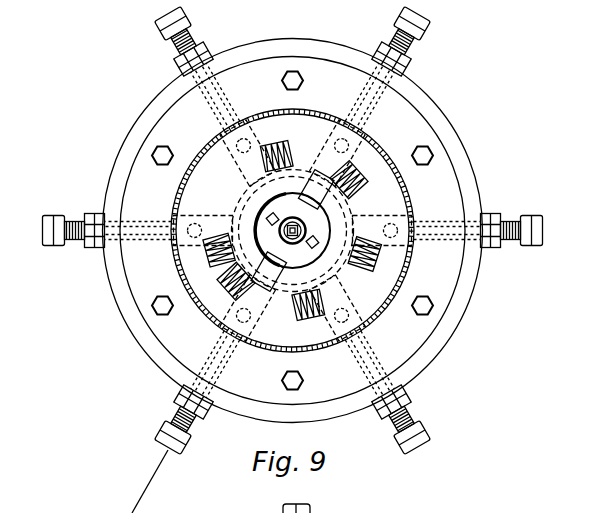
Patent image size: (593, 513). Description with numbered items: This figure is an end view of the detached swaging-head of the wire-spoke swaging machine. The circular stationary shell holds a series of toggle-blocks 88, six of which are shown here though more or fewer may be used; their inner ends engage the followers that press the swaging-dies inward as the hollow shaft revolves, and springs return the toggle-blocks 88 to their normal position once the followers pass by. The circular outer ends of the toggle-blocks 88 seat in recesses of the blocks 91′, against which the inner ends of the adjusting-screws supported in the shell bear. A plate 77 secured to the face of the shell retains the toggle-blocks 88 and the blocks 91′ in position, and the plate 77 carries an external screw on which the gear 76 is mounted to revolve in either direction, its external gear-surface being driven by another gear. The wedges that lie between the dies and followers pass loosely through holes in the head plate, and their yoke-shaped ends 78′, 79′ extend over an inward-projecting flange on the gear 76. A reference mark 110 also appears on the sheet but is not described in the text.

The gear 76 is at (397, 268).
The plate 77 is at (447, 173).
The yoke-shaped end 78′ is at (304, 177).
The yoke-shaped end 79′ is at (260, 262).
The toggle-blocks 88 is at (249, 178).
The blocks 91′ is at (238, 154).
The bolt head 110 is at (411, 28).